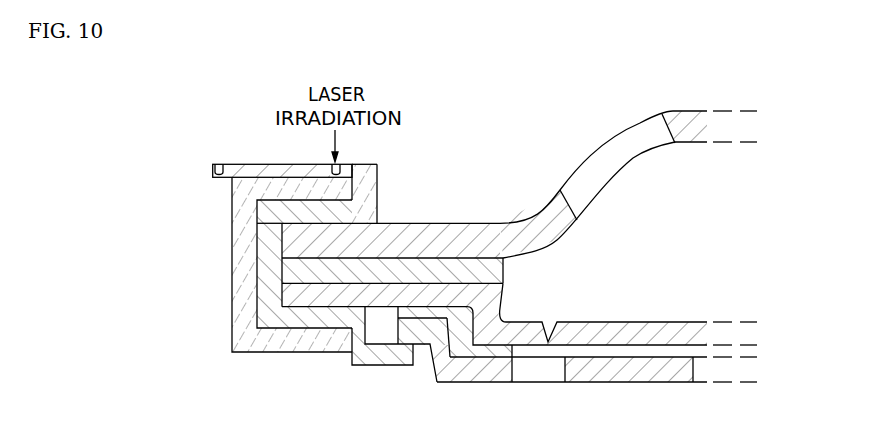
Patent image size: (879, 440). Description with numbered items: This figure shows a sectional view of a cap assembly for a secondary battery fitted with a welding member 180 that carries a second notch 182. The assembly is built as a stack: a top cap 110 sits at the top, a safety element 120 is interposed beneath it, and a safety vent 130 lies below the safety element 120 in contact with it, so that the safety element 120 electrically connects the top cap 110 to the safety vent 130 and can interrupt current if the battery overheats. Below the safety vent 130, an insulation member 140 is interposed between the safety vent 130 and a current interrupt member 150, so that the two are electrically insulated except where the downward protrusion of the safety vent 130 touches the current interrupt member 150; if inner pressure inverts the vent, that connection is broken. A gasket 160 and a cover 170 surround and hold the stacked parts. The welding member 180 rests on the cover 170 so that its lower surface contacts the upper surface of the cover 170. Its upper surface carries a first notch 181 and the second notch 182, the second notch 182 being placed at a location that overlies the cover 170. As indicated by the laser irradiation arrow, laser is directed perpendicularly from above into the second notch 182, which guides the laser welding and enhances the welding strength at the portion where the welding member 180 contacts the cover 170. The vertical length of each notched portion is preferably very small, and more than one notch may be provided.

The top cap 110 is at (293, 247).
The safety element 120 is at (293, 273).
The safety vent 130 is at (293, 295).
The insulation member 140 is at (407, 314).
The current interrupt member 150 is at (413, 335).
The gasket 160 is at (267, 225).
The cover 170 is at (243, 199).
The welding member 180 is at (212, 171).
The first notch 181 is at (221, 167).
The second notch 182 is at (339, 167).